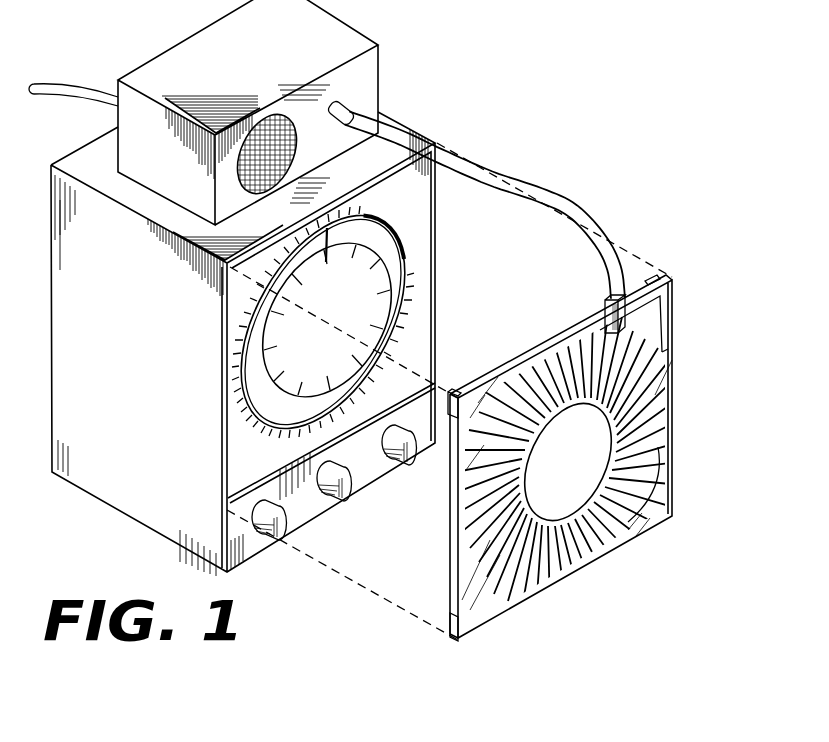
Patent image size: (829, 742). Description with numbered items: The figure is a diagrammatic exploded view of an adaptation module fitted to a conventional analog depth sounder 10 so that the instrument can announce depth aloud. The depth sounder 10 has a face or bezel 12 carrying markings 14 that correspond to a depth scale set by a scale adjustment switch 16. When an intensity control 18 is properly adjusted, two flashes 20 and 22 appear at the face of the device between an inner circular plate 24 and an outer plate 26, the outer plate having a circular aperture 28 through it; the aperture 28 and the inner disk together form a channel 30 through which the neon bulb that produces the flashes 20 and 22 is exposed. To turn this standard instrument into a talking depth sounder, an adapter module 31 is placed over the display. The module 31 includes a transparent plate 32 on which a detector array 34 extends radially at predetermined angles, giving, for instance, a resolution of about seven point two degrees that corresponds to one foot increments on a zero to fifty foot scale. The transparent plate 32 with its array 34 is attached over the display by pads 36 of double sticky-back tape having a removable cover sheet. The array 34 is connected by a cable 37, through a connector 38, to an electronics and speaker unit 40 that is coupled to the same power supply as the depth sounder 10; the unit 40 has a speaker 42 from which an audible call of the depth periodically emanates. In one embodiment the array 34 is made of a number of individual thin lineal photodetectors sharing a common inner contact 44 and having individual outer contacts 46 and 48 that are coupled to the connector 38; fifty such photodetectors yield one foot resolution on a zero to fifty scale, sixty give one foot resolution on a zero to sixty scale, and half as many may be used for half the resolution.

The depth sounder 10 is at (419, 120).
The face or bezel 12 is at (240, 289).
The markings 14 is at (397, 236).
The scale adjustment switch 16 is at (295, 519).
The intensity control 18 is at (412, 452).
The flash 20 is at (296, 220).
The flash 22 is at (404, 259).
The inner circular plate 24 is at (346, 311).
The outer plate 26 is at (258, 483).
The aperture 28 is at (279, 414).
The channel 30 is at (256, 378).
The adapter module 31 is at (694, 405).
The transparent plate 32 is at (674, 363).
The detector array 34 is at (658, 487).
The pads 36 is at (663, 274).
The cable 37 is at (580, 212).
The connector 38 is at (604, 304).
The electronics and speaker unit 40 is at (383, 96).
The speaker 42 is at (297, 151).
The common inner contact 44 is at (524, 488).
The outer contact 46 is at (664, 306).
The outer contact 48 is at (670, 337).